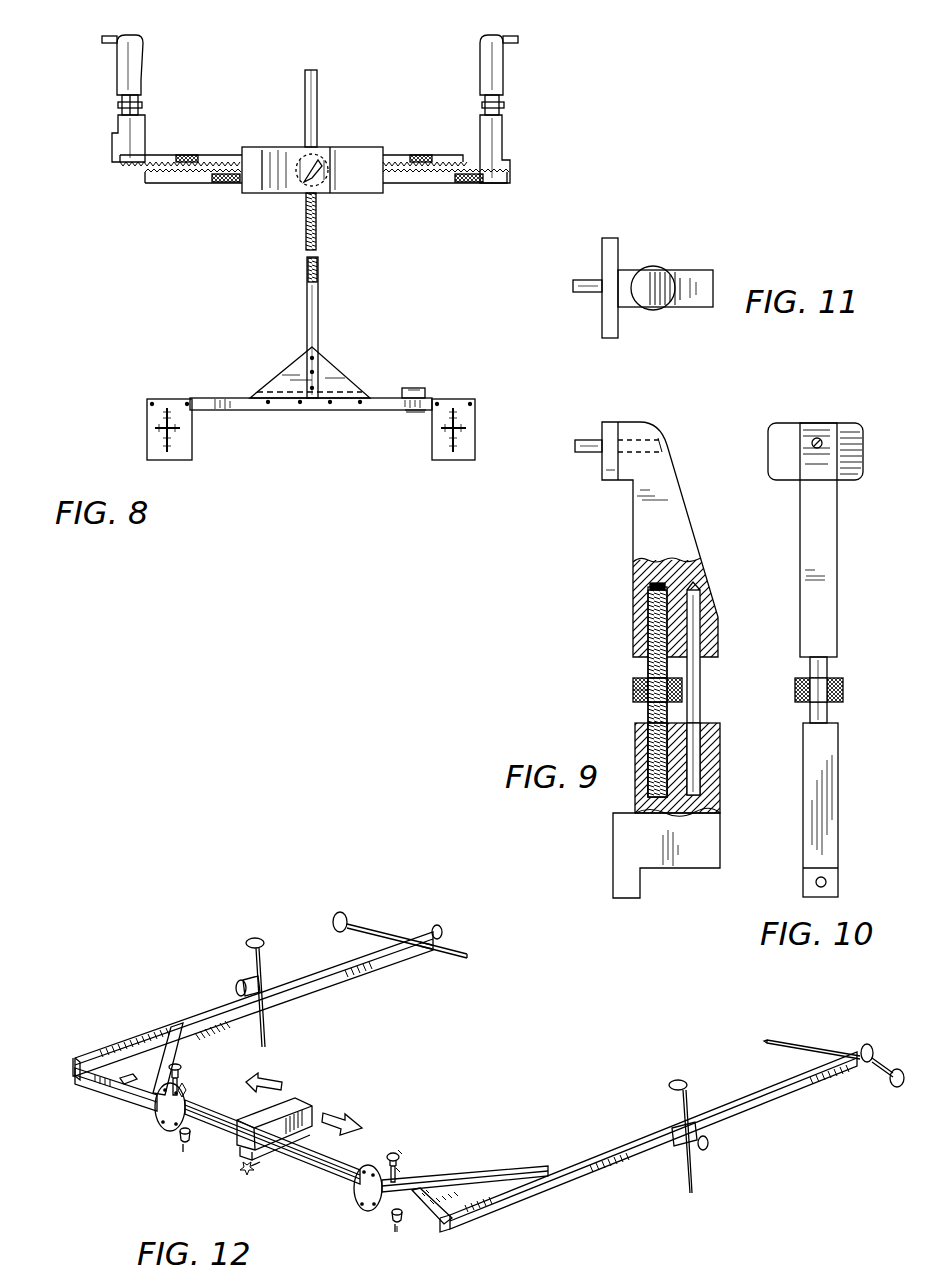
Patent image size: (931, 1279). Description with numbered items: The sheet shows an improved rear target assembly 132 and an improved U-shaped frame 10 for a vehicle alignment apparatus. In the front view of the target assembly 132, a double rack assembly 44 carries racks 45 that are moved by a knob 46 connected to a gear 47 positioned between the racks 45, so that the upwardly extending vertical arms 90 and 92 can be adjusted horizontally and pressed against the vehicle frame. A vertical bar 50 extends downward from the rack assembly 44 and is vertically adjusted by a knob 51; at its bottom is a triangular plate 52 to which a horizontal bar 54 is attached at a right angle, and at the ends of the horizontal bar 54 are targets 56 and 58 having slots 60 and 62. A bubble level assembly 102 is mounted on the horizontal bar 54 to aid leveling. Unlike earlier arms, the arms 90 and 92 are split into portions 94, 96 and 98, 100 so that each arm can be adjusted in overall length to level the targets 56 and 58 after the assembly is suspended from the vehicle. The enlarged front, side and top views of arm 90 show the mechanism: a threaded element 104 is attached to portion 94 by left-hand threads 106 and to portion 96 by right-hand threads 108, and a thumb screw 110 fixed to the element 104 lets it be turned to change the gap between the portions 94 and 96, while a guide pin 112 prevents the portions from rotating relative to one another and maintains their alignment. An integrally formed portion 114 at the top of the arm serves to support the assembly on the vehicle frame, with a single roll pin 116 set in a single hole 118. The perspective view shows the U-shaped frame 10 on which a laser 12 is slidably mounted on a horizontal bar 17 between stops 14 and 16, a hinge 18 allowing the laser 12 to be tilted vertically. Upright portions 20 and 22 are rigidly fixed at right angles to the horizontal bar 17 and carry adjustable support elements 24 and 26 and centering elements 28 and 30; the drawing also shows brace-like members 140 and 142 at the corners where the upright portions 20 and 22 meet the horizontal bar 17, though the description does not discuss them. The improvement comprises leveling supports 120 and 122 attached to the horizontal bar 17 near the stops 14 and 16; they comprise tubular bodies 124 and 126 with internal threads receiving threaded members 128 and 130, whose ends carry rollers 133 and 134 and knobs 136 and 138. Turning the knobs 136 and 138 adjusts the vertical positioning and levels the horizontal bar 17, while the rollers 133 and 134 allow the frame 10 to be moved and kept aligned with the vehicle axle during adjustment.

In FIG. 12, the U-shaped frame 10 is at (488, 1087).
In FIG. 12, the laser 12 is at (262, 1130).
In FIG. 12, the stop 14 is at (160, 1121).
In FIG. 12, the stop 16 is at (358, 1202).
In FIG. 12, the horizontal bar 17 is at (134, 1100).
In FIG. 12, the hinge 18 is at (300, 1166).
In FIG. 12, the upright portion 20 is at (196, 1018).
In FIG. 12, the upright portion 22 is at (745, 1107).
In FIG. 12, the adjustable support element 24 is at (255, 960).
In FIG. 12, the adjustable support element 26 is at (682, 1104).
In FIG. 12, the centering element 28 is at (471, 958).
In FIG. 12, the centering element 30 is at (794, 1043).
In FIG. 8, the double rack assembly 44 is at (372, 200).
In FIG. 8, the racks 45 is at (190, 150).
In FIG. 8, the knob 46 is at (278, 200).
In FIG. 8, the gear 47 is at (330, 200).
In FIG. 8, the vertical bar 50 is at (319, 310).
In FIG. 8, the knob 51 is at (310, 158).
In FIG. 8, the triangular plate 52 is at (338, 372).
In FIG. 8, the horizontal bar 54 is at (395, 396).
In FIG. 8, the target 56 is at (193, 439).
In FIG. 8, the target 58 is at (475, 435).
In FIG. 8, the slot 60 is at (182, 428).
In FIG. 8, the slot 62 is at (463, 428).
In FIG. 8, the vertical arm 90 is at (117, 104).
In FIG. 11, the vertical arm 90 is at (675, 273).
In FIG. 9, the vertical arm 90 is at (655, 650).
In FIG. 10, the vertical arm 90 is at (812, 644).
In FIG. 8, the vertical arm 92 is at (499, 109).
In FIG. 8, the arm portion 94 is at (130, 52).
In FIG. 9, the arm portion 94 is at (641, 548).
In FIG. 10, the arm portion 94 is at (826, 553).
In FIG. 8, the arm portion 96 is at (118, 133).
In FIG. 9, the arm portion 96 is at (721, 812).
In FIG. 10, the arm portion 96 is at (803, 793).
In FIG. 8, the arm portion 98 is at (483, 80).
In FIG. 8, the arm portion 100 is at (500, 148).
In FIG. 8, the bubble level assembly 102 is at (333, 411).
In FIG. 9, the threaded element 104 is at (647, 672).
In FIG. 9, the left-hand threads 106 is at (650, 621).
In FIG. 9, the right-hand threads 108 is at (650, 748).
In FIG. 9, the thumb screw 110 is at (632, 692).
In FIG. 10, the thumb screw 110 is at (795, 686).
In FIG. 9, the guide pin 112 is at (701, 706).
In FIG. 10, the guide pin 112 is at (812, 710).
In FIG. 11, the integrally formed portion 114 is at (618, 250).
In FIG. 10, the integrally formed portion 114 is at (849, 428).
In FIG. 11, the roll pin 116 is at (581, 279).
In FIG. 9, the roll pin 116 is at (583, 439).
In FIG. 11, the hole 118 is at (668, 276).
In FIG. 9, the hole 118 is at (669, 440).
In FIG. 10, the hole 118 is at (817, 438).
In FIG. 12, the leveling support 120 is at (193, 1068).
In FIG. 12, the leveling support 122 is at (389, 1150).
In FIG. 12, the tubular body 124 is at (185, 1089).
In FIG. 12, the tubular body 126 is at (400, 1168).
In FIG. 12, the threaded member 128 is at (181, 1138).
In FIG. 12, the threaded member 130 is at (393, 1214).
In FIG. 8, the rear target assembly 132 is at (357, 125).
In FIG. 12, the roller 133 is at (238, 1167).
In FIG. 12, the roller 134 is at (400, 1232).
In FIG. 12, the knob 136 is at (179, 1072).
In FIG. 12, the knob 138 is at (398, 1150).
In FIG. 12, the brace 140 is at (132, 1074).
In FIG. 12, the brace 142 is at (431, 1188).